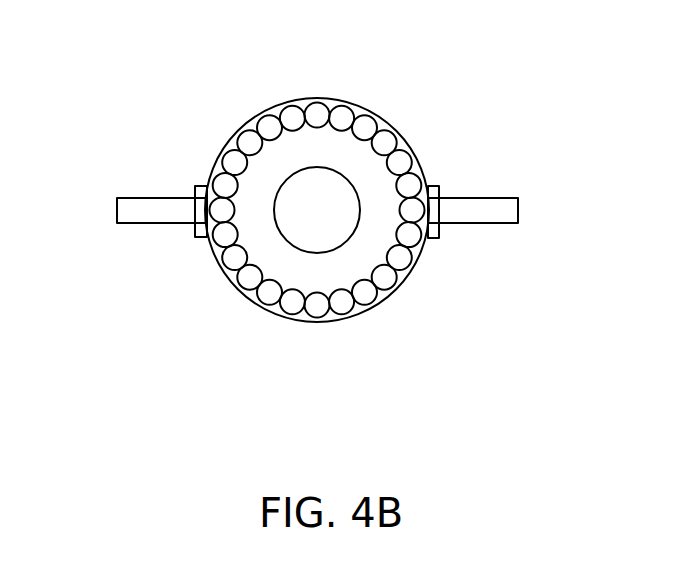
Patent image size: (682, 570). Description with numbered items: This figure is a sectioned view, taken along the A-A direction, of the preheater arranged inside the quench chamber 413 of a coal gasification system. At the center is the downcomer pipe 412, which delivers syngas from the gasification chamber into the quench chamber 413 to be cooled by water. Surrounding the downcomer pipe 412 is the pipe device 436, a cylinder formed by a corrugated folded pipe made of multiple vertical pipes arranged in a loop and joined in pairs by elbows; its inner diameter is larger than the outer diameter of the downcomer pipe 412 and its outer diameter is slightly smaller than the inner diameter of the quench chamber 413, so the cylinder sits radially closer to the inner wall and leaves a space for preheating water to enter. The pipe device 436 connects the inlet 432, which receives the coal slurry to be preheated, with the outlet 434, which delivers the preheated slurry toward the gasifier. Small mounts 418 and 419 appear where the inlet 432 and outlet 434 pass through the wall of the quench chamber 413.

The downcomer pipe 412 is at (323, 180).
The quench chamber 413 is at (252, 127).
The left mounting bracket 418 is at (190, 176).
The right mounting bracket 419 is at (442, 178).
The inlet 432 is at (106, 213).
The outlet 434 is at (527, 213).
The pipe device 436 is at (248, 290).